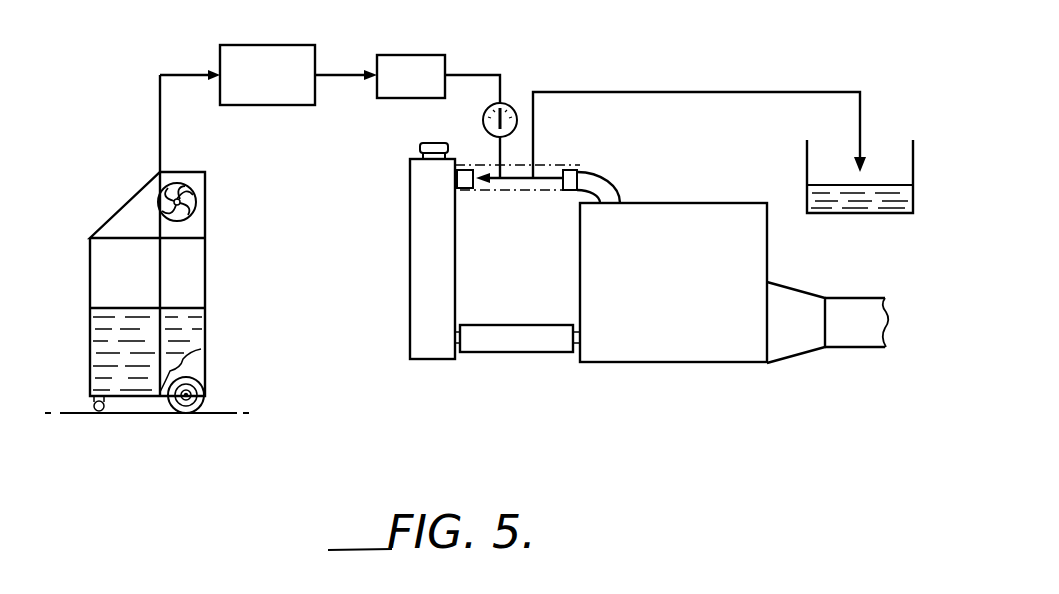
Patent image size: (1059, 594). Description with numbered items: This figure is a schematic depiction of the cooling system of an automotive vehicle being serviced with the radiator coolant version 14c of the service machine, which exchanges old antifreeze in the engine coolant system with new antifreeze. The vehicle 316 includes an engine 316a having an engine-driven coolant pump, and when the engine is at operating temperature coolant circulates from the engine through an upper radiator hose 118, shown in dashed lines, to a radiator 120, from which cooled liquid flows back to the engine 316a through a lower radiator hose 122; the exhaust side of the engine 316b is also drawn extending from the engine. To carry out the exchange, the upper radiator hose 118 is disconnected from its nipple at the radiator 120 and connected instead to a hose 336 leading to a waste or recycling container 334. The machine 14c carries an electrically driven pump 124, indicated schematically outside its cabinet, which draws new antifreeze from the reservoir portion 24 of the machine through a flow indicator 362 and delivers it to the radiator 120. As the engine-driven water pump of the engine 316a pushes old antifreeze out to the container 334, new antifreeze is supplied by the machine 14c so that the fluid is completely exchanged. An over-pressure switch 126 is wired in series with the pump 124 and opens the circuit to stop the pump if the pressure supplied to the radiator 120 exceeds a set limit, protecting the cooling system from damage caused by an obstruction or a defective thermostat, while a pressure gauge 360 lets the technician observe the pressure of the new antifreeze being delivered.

The pump 124 is at (270, 45).
The over-pressure switch 126 is at (420, 55).
The pressure gauge 360 is at (483, 120).
The radiator 120 is at (410, 206).
The upper radiator hose 118 is at (533, 192).
The lower radiator hose 122 is at (515, 352).
The vehicle 316 is at (749, 310).
The engine 316a is at (684, 322).
The exhaust pipe 316b is at (855, 298).
The hose 336 is at (684, 91).
The waste or recycling container 334 is at (807, 185).
The radiator coolant version of the service machine 14c is at (213, 270).
The reservoir portion 24 is at (207, 334).
The flow indicator 362 is at (148, 191).